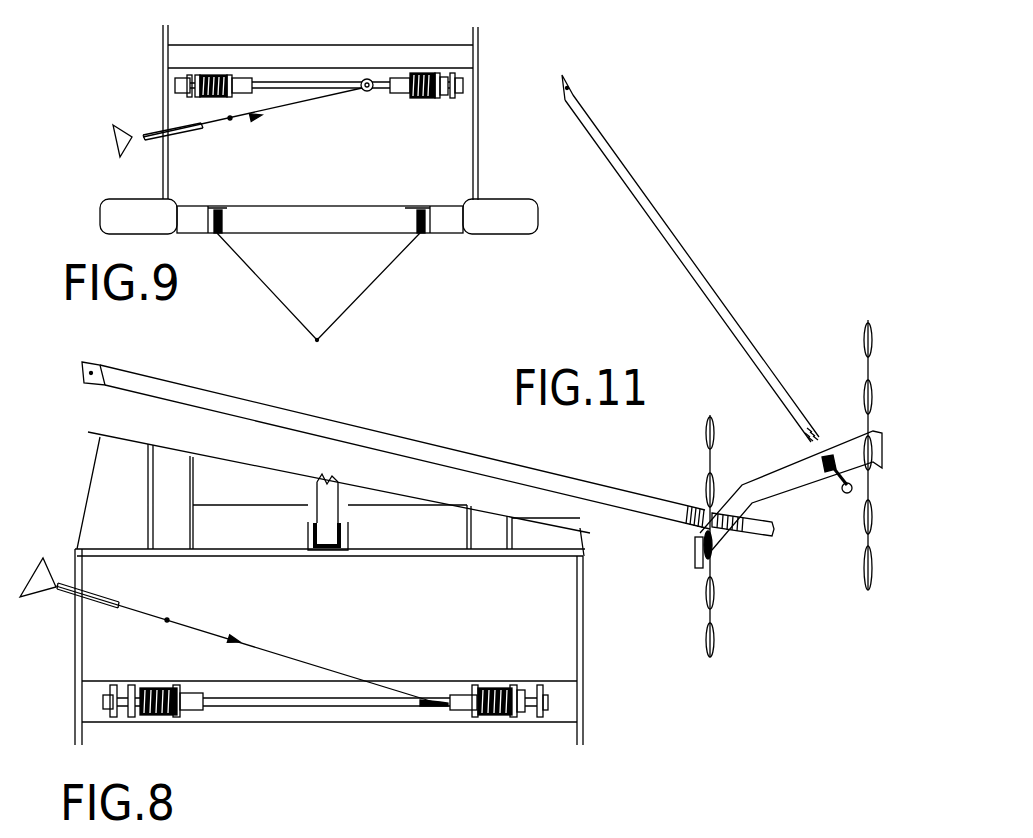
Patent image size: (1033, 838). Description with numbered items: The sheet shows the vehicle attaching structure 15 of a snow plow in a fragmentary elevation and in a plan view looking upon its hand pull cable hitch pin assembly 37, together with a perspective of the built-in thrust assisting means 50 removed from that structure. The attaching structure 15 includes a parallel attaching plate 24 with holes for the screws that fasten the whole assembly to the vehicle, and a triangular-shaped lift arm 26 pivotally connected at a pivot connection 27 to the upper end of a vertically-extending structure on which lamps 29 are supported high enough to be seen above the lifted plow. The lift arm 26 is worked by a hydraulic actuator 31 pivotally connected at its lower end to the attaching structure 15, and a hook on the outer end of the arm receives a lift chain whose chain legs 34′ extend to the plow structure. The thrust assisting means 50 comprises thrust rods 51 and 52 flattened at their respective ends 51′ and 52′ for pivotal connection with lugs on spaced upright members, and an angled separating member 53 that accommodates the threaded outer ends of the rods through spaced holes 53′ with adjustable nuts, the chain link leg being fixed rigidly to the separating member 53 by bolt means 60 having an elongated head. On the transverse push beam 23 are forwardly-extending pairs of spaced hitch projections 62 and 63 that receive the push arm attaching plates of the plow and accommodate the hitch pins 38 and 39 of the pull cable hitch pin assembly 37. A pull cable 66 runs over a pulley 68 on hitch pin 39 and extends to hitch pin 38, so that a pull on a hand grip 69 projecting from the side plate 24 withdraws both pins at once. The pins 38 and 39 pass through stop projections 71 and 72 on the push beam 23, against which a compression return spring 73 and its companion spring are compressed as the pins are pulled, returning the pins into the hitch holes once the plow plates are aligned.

In FIG. 8, the vehicle attaching structure 15 is at (82, 475).
In FIG. 9, the push beam 23 is at (350, 45).
In FIG. 8, the push beam 23 is at (304, 722).
In FIG. 9, the attaching plate 24 is at (165, 128).
In FIG. 8, the attaching plate 24 is at (75, 628).
In FIG. 9, the lift arm 26 is at (334, 287).
In FIG. 9, the pivot connection 27 is at (223, 222).
In FIG. 9, the lamps 29 is at (118, 199).
In FIG. 8, the hydraulic actuator 31 is at (323, 522).
In FIG. 11, the chain leg 34′ is at (707, 463).
In FIG. 9, the pull cable hitch pin assembly 37 is at (263, 119).
In FIG. 8, the pull cable hitch pin assembly 37 is at (242, 638).
In FIG. 9, the hitch pin 38 is at (237, 78).
In FIG. 8, the hitch pin 38 is at (123, 718).
In FIG. 9, the hitch pin 39 is at (400, 78).
In FIG. 8, the hitch pin 39 is at (528, 717).
In FIG. 11, the thrust assisting means 50 is at (712, 326).
In FIG. 8, the thrust rod 51 is at (315, 417).
In FIG. 8, the flattened end 51′ is at (95, 363).
In FIG. 11, the thrust rod 52 is at (672, 232).
In FIG. 11, the flattened end 52′ is at (574, 90).
In FIG. 11, the separating member 53 is at (793, 468).
In FIG. 11, the hole 53′ is at (722, 522).
In FIG. 11, the bolt means 60 is at (695, 547).
In FIG. 9, the hitch projection 62 is at (190, 75).
In FIG. 8, the hitch projection 62 is at (133, 685).
In FIG. 9, the hitch projection 63 is at (452, 73).
In FIG. 8, the hitch projection 63 is at (539, 688).
In FIG. 9, the pull cable 66 is at (371, 91).
In FIG. 8, the pull cable 66 is at (293, 660).
In FIG. 8, the pulley 68 is at (433, 700).
In FIG. 9, the hand grip 69 is at (106, 143).
In FIG. 8, the hand grip 69 is at (42, 566).
In FIG. 9, the stop projection 71 is at (232, 96).
In FIG. 8, the stop projection 71 is at (181, 717).
In FIG. 9, the stop projection 72 is at (413, 98).
In FIG. 8, the stop projection 72 is at (475, 717).
In FIG. 8, the compression return spring 73 is at (153, 717).